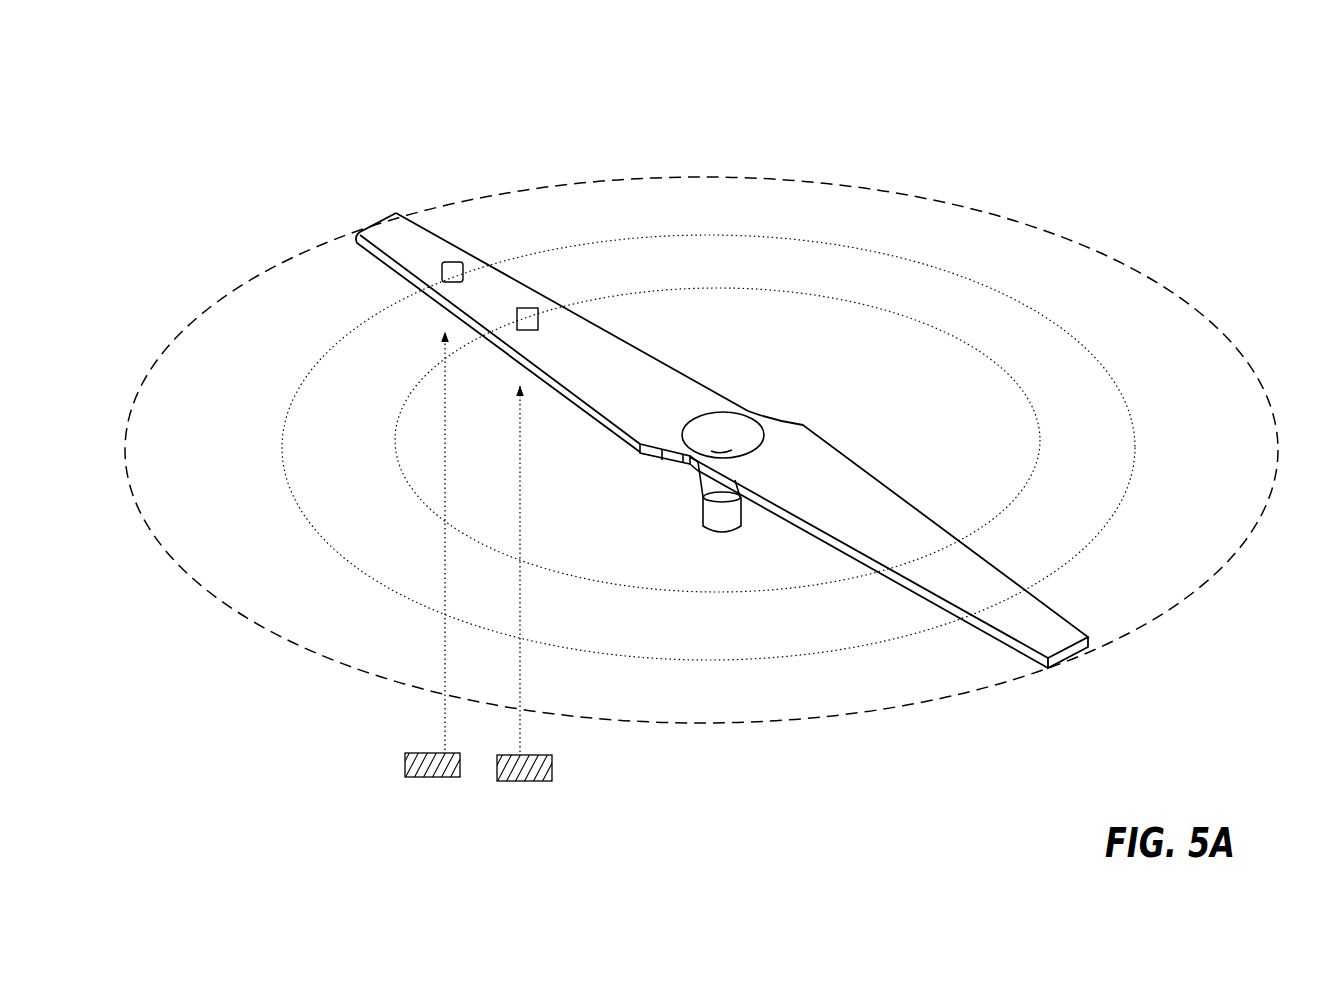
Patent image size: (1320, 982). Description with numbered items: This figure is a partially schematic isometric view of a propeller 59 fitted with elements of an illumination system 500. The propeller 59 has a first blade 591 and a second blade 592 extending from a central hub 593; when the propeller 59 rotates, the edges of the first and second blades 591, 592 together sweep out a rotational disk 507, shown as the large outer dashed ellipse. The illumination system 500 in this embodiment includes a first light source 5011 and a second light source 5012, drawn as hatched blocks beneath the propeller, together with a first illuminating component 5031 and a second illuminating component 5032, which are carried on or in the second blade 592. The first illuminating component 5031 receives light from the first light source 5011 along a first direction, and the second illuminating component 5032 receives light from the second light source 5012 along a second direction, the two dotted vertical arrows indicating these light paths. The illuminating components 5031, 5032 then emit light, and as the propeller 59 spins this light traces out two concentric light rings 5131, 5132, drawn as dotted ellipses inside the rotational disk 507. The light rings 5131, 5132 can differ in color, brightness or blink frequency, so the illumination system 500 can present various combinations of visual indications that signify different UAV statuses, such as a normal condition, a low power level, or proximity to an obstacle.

The illumination system 500 is at (1118, 90).
The rotational disk 507 is at (828, 169).
The propeller 59 is at (729, 433).
The second blade 592 is at (470, 262).
The first blade 591 is at (958, 594).
The hub 593 is at (716, 425).
The first illuminating component 5031 is at (534, 317).
The second illuminating component 5032 is at (457, 266).
The light ring 5131 is at (833, 597).
The light ring 5132 is at (782, 662).
The first light source 5011 is at (527, 781).
The second light source 5012 is at (435, 779).